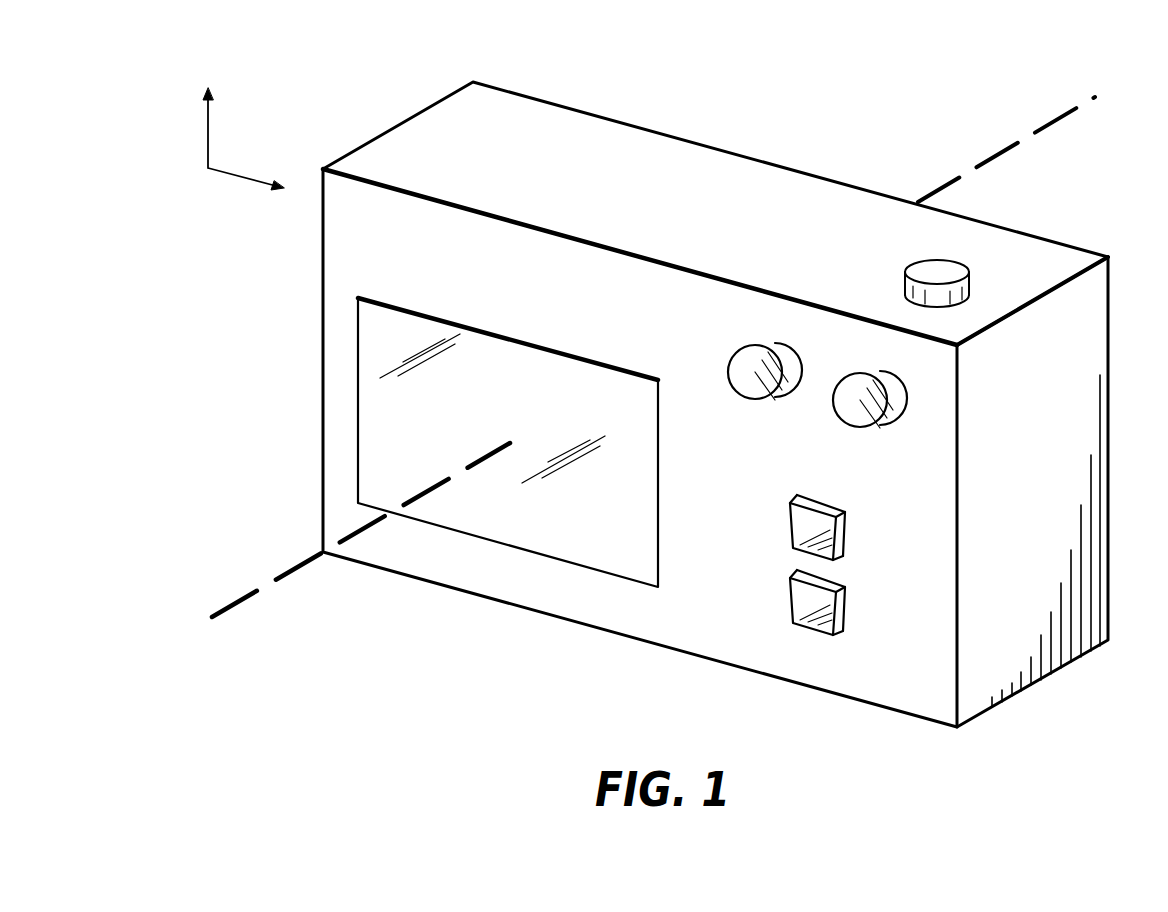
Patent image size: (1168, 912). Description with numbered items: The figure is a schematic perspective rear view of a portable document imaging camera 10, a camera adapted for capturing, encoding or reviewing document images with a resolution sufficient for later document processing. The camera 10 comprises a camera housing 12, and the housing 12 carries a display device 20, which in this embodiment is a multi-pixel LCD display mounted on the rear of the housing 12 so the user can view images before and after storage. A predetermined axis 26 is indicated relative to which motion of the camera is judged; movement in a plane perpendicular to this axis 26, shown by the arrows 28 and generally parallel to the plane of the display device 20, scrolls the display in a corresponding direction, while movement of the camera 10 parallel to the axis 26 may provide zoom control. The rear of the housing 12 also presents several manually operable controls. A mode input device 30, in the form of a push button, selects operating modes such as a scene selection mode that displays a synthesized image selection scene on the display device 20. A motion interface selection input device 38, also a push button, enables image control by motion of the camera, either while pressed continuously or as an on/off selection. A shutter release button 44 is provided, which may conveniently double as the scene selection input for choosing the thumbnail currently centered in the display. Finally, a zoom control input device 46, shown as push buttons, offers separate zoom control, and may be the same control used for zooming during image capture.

The portable document imaging camera 10 is at (723, 110).
The camera housing 12 is at (1093, 348).
The display device 20 is at (518, 508).
The predetermined axis 26 is at (212, 166).
The arrows 28 is at (208, 127).
The mode input device 30 is at (793, 522).
The motion interface selection input device 38 is at (793, 600).
The shutter release button 44 is at (922, 268).
The zoom control input device 46 is at (843, 393).